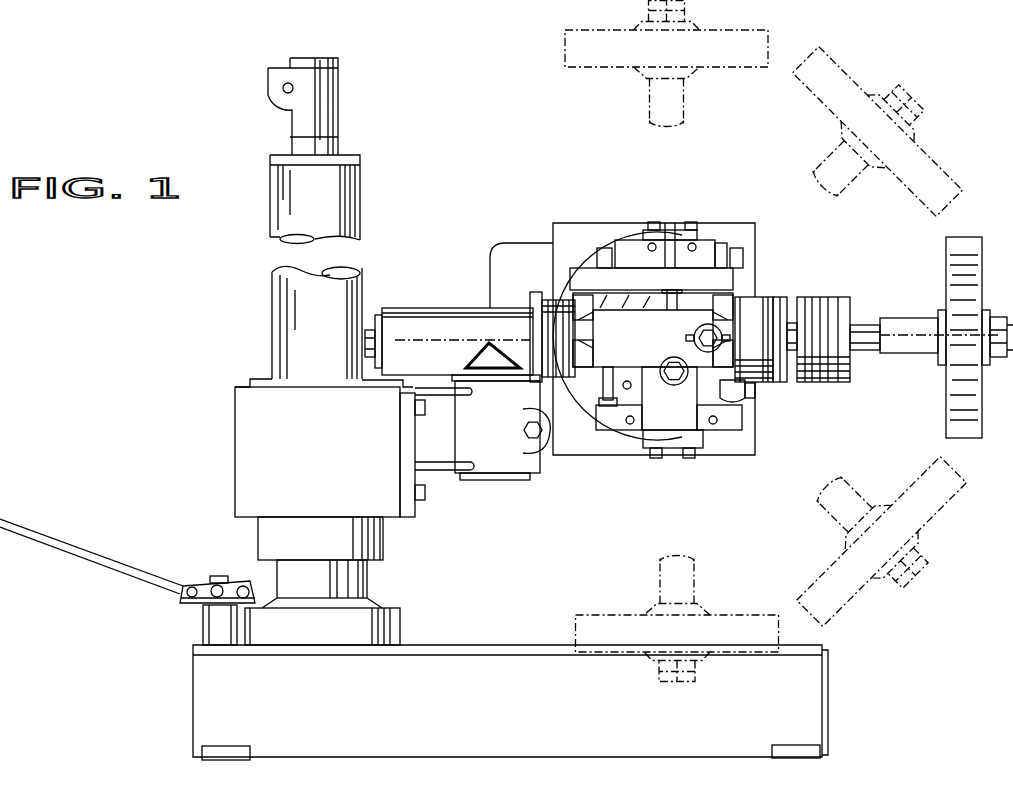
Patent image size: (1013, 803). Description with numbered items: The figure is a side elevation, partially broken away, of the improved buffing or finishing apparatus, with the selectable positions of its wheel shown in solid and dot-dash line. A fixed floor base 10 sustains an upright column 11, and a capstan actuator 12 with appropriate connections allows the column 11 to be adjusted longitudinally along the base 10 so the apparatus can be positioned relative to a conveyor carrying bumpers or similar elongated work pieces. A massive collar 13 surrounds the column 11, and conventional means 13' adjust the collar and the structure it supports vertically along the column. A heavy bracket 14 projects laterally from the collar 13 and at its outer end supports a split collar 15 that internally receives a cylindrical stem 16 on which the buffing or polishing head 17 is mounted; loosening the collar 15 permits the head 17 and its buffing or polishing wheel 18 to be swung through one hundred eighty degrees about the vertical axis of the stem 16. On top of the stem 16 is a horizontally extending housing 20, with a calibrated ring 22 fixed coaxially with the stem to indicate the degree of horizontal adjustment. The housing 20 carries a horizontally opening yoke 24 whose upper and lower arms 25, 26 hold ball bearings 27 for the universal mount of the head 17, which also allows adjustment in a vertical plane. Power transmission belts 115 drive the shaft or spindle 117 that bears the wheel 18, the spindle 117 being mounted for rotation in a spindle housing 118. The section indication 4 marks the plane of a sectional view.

The section line 4- 4 is at (420, 318).
The fixed floor base 10 is at (515, 650).
The upright column 11 is at (346, 230).
The capstan actuator 12 is at (203, 588).
The massive collar 13 is at (301, 448).
The adjusting means 13' is at (285, 106).
The heavy bracket 14 is at (445, 450).
The split collar 15 is at (532, 455).
The cylindrical stem 16 is at (520, 480).
The buffing or polishing head 17 is at (515, 240).
The buffing or polishing wheel 18 is at (963, 243).
The horizontally extending housing 20 is at (437, 312).
The calibrated ring 22 is at (503, 379).
The horizontally opening yoke 24 is at (572, 250).
The upper arm of yoke 25 is at (635, 233).
The lower arm of yoke 26 is at (638, 435).
The ball bearings 27 is at (698, 232).
The power transmission belts 115 is at (822, 300).
The shaft or spindle 117 is at (868, 348).
The spindle housing 118 is at (648, 349).